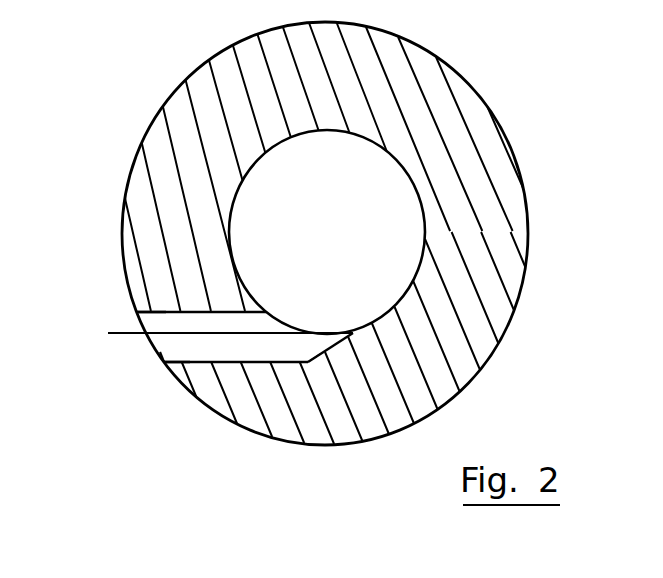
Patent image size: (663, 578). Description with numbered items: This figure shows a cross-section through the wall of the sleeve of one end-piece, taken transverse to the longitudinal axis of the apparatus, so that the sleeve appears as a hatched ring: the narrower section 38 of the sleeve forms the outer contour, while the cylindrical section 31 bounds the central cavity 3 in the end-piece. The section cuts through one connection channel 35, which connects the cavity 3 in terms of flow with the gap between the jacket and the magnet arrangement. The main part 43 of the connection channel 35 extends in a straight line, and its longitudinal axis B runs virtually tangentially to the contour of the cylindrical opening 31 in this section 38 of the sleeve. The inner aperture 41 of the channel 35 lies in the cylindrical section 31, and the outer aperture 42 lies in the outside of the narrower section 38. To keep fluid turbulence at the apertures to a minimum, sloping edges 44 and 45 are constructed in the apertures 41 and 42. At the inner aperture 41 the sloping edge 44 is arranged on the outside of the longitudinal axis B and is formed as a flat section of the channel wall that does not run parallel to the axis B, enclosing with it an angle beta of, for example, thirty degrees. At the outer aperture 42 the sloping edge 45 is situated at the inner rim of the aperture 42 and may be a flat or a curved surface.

The narrower section 38 is at (190, 77).
The cylindrical section 31 is at (407, 178).
The cavity 3 is at (302, 253).
The inner aperture 41 is at (285, 322).
The outer aperture 42 is at (158, 354).
The main part 43 is at (236, 364).
The sloping edge 44 is at (343, 345).
The sloping edge 45 is at (137, 310).
The connection channel 35 is at (146, 350).
The longitudinal axis B is at (120, 333).